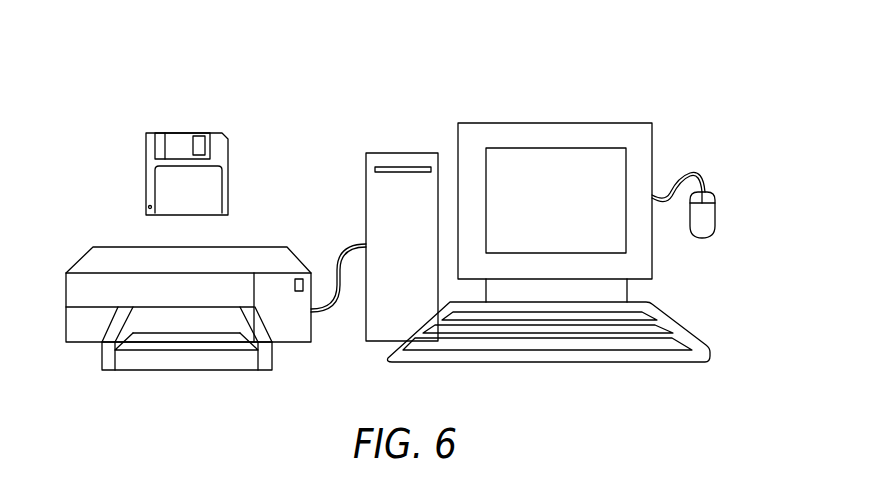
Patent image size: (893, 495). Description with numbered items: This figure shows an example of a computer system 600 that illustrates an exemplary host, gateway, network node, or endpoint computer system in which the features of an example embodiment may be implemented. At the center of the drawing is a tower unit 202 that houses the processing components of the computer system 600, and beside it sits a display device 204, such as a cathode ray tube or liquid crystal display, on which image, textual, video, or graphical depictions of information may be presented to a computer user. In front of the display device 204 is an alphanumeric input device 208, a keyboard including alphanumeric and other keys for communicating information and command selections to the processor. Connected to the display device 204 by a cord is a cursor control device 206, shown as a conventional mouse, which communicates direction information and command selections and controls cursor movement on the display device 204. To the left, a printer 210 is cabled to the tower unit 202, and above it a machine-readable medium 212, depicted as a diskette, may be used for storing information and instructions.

The computer system 600 is at (686, 43).
The computer tower / processing unit 202 is at (402, 153).
The display device 204 is at (603, 123).
The cursor control device 206 is at (715, 211).
The alphanumeric input device 208 is at (669, 318).
The printer 210 is at (142, 247).
The machine-readable medium 212 is at (188, 133).